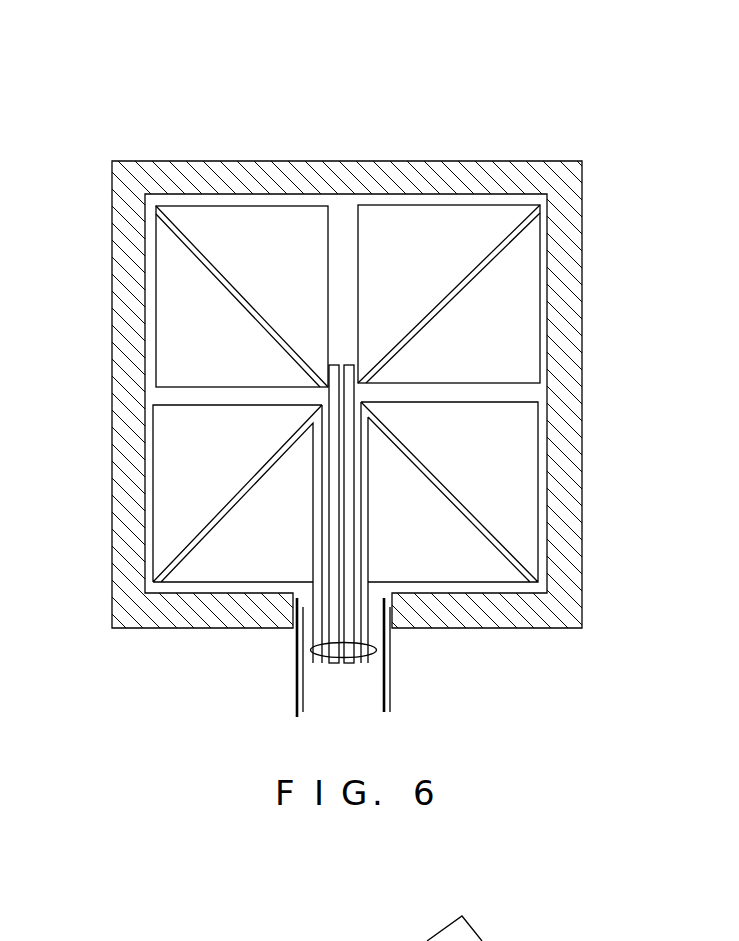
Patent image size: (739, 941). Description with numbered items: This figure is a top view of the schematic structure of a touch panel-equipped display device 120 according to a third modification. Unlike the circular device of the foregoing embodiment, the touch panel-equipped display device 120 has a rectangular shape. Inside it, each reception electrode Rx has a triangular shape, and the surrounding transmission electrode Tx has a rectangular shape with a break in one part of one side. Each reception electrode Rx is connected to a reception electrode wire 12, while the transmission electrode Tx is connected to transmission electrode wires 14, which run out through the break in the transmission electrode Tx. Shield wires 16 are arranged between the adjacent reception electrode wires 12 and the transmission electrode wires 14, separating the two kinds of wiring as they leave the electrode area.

The touch panel-equipped display device 120 is at (369, 374).
The transmission electrode Tx is at (581, 161).
The reception electrode Rx is at (286, 271).
The reception electrode wire 12 is at (333, 657).
The transmission electrode wire 14 is at (296, 694).
The shield wire 16 is at (376, 695).